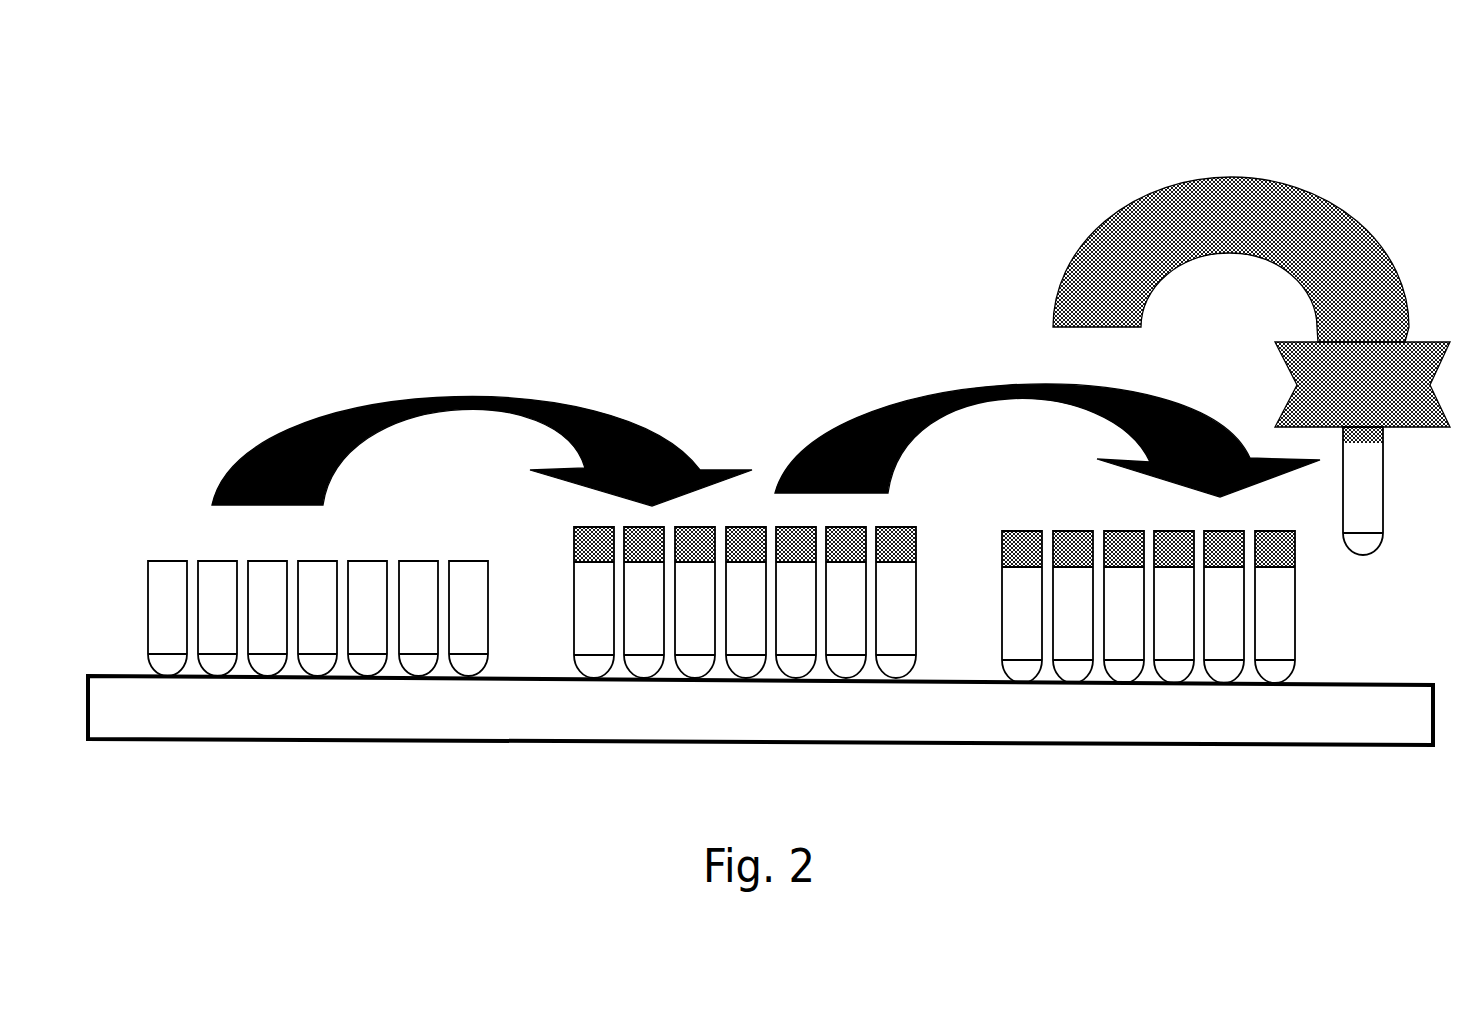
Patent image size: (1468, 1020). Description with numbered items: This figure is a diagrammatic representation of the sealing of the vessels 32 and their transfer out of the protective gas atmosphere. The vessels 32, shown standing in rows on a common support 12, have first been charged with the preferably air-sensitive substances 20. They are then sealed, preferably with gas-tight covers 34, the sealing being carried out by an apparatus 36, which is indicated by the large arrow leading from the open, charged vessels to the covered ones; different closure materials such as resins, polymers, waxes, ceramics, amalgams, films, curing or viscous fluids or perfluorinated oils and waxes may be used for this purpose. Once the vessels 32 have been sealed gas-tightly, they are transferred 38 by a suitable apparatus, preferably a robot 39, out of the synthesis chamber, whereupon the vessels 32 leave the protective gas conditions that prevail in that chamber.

The substrate 12 is at (464, 716).
The air-sensitive substances 20 is at (721, 656).
The vessels 32 is at (450, 572).
The gas-tight covers 34 is at (917, 532).
The apparatus 36 is at (469, 322).
The transfer 38 is at (1251, 304).
The robot 39 is at (1355, 223).